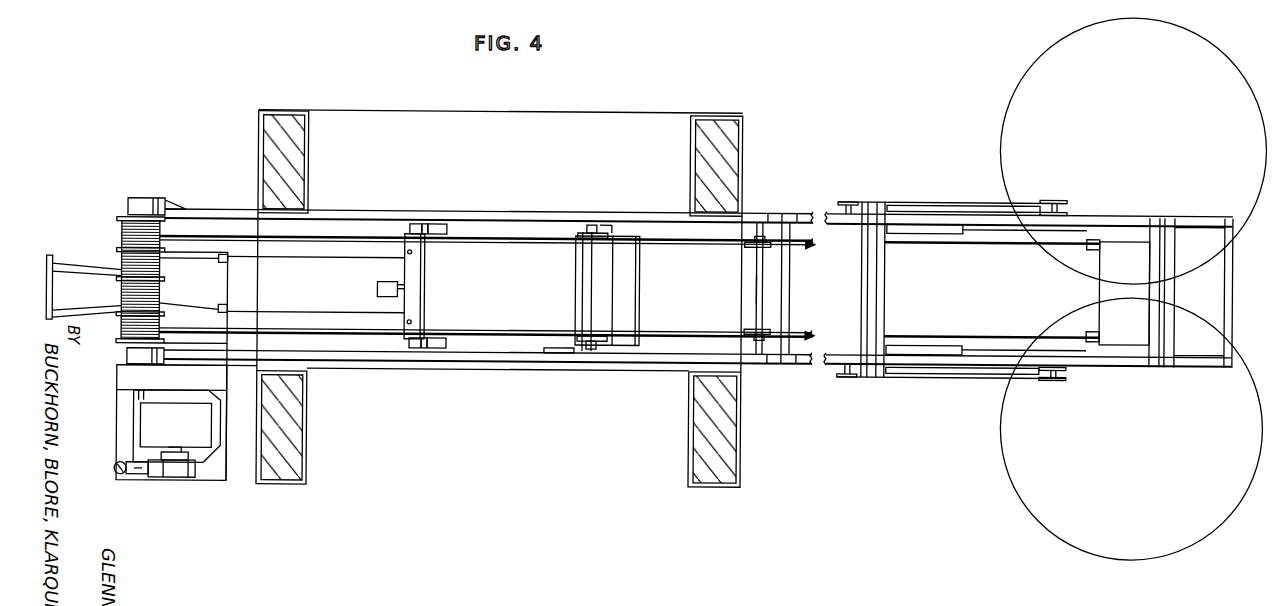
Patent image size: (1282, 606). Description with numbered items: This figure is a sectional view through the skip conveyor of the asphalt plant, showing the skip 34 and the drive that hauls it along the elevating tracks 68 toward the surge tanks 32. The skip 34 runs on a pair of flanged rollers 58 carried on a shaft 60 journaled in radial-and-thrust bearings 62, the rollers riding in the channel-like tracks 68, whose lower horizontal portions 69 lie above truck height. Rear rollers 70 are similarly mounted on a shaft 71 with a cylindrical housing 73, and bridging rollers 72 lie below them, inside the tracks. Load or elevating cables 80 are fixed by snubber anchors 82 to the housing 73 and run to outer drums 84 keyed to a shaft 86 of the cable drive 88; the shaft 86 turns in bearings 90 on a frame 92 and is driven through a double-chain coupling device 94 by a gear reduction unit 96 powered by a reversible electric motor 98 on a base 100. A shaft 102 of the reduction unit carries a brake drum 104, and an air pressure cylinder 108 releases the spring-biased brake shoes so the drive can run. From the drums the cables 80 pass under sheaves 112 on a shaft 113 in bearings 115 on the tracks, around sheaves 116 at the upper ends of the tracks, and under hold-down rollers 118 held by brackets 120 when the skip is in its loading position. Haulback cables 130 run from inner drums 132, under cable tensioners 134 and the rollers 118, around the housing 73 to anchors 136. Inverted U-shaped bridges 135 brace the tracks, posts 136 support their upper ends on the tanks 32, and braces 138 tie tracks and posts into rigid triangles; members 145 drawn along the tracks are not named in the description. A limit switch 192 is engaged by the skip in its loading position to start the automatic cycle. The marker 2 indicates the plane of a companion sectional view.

The section line 2 is at (512, 345).
The surge tank 32 is at (1066, 44).
The skip 34 is at (643, 295).
The flanged rollers 58 is at (593, 224).
The shaft 60 is at (586, 229).
The radial-and-thrust bearings 62 is at (606, 224).
The elevating tracks 68 is at (665, 216).
The lower horizontal portions 69 is at (496, 235).
The flanged rear rollers 70 is at (425, 222).
The shaft 71 is at (410, 227).
The dump wheels or bridging rollers 72 is at (440, 222).
The cylindrical housing 73 is at (403, 277).
The load or elevating cables 80 is at (816, 243).
The snubber anchors 82 is at (407, 250).
The outer drums 84 is at (122, 228).
The shaft 86 is at (143, 200).
The cable drive 88 is at (209, 468).
The bearings 90 is at (150, 205).
The frame 92 is at (180, 205).
The double-chain drive coupling device 94 is at (118, 384).
The gear reduction unit 96 is at (150, 415).
The reversible electric motor 98 is at (219, 310).
The base 100 is at (228, 284).
The shaft 102 is at (186, 430).
The brake drum 104 is at (172, 477).
The air pressure cylinder 108 is at (120, 475).
The sheaves 112 is at (748, 236).
The shaft 113 is at (757, 309).
The bearings 115 is at (754, 217).
The sheaves 116 is at (1093, 337).
The cable hold-down rollers 118 is at (792, 292).
The brackets 120 is at (788, 210).
The haulback cables 130 is at (303, 310).
The inner drums 132 is at (122, 290).
The cable tensioners 134 is at (223, 263).
The inverted U-shaped bridges 135 is at (878, 373).
The anchors 136 is at (427, 312).
The braces 138 is at (935, 373).
The strip 145 is at (930, 229).
The limit switch 192 is at (378, 291).